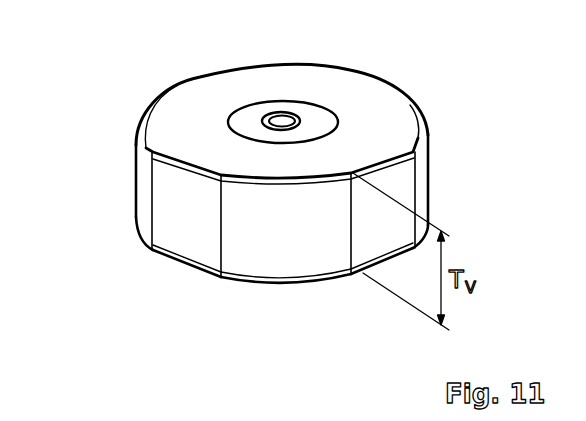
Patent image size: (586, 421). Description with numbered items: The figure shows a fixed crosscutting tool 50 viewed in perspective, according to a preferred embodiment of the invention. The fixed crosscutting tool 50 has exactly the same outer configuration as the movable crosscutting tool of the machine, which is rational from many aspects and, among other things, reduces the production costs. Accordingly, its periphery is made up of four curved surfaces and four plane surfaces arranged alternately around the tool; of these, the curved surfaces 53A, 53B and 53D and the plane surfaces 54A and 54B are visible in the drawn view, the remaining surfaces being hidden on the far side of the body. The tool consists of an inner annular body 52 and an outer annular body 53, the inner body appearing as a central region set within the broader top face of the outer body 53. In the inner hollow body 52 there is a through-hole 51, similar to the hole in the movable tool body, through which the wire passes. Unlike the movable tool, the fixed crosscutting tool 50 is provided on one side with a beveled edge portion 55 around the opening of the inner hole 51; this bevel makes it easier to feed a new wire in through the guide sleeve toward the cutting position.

The fixed crosscutting tool 50 is at (266, 194).
The through-hole 51 is at (282, 118).
The inner annular body 52 is at (252, 116).
The outer annular body 53 is at (192, 122).
The curved surface 53A is at (258, 243).
The curved surface 53B is at (420, 173).
The curved surface 53D is at (143, 182).
The plane surface 54A is at (183, 237).
The plane surface 54B is at (398, 188).
The beveled edge portion 55 is at (302, 120).